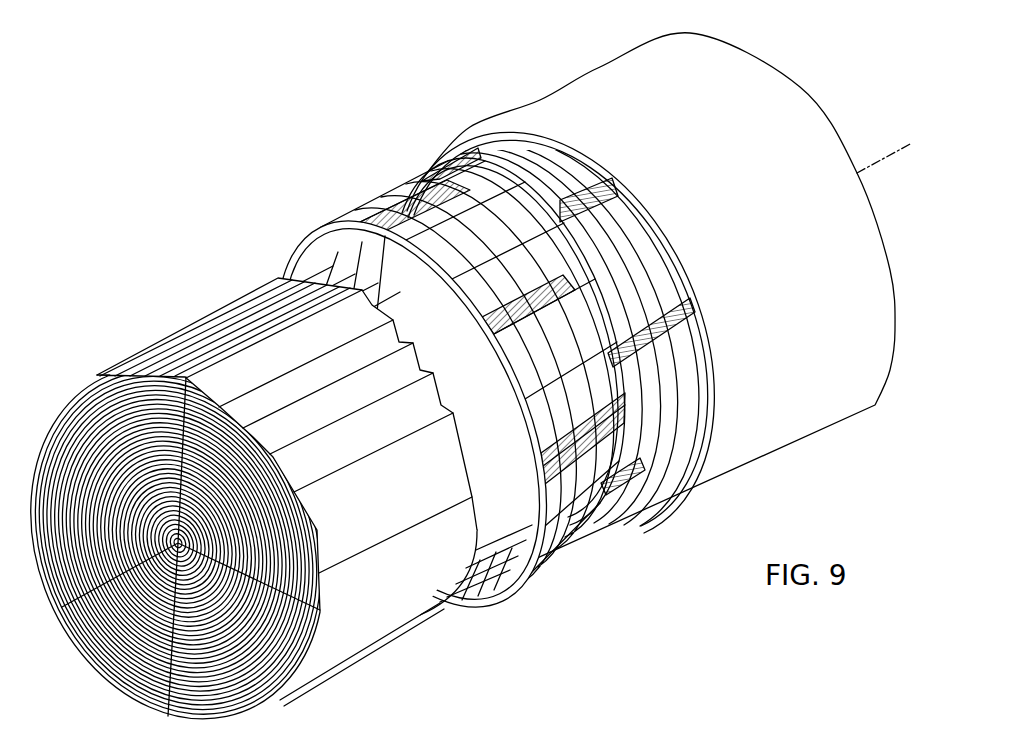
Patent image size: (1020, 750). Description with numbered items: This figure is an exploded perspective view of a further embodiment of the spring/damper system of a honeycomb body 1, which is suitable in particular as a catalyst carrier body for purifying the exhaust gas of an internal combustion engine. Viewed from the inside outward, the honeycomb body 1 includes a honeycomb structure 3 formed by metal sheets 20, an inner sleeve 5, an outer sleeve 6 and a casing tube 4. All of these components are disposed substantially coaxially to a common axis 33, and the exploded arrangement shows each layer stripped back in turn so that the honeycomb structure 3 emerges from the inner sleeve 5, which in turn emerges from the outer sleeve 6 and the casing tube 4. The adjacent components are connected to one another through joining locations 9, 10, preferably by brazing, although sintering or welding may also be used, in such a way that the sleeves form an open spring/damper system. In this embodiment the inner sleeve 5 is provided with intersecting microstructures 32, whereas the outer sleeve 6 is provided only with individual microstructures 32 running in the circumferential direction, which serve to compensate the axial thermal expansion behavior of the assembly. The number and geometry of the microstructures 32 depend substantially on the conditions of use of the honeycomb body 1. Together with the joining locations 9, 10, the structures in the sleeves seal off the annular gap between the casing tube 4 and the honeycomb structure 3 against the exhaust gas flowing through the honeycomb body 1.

The honeycomb body 1 is at (224, 290).
The honeycomb structure 3 is at (128, 632).
The casing tube 4 is at (802, 440).
The inner sleeve 5 is at (478, 600).
The outer sleeve 6 is at (645, 510).
The joining location 9 is at (345, 236).
The joining location 10 is at (423, 180).
The metal sheets 20 is at (378, 640).
The microstructures 32 is at (578, 553).
The axis 33 is at (888, 156).